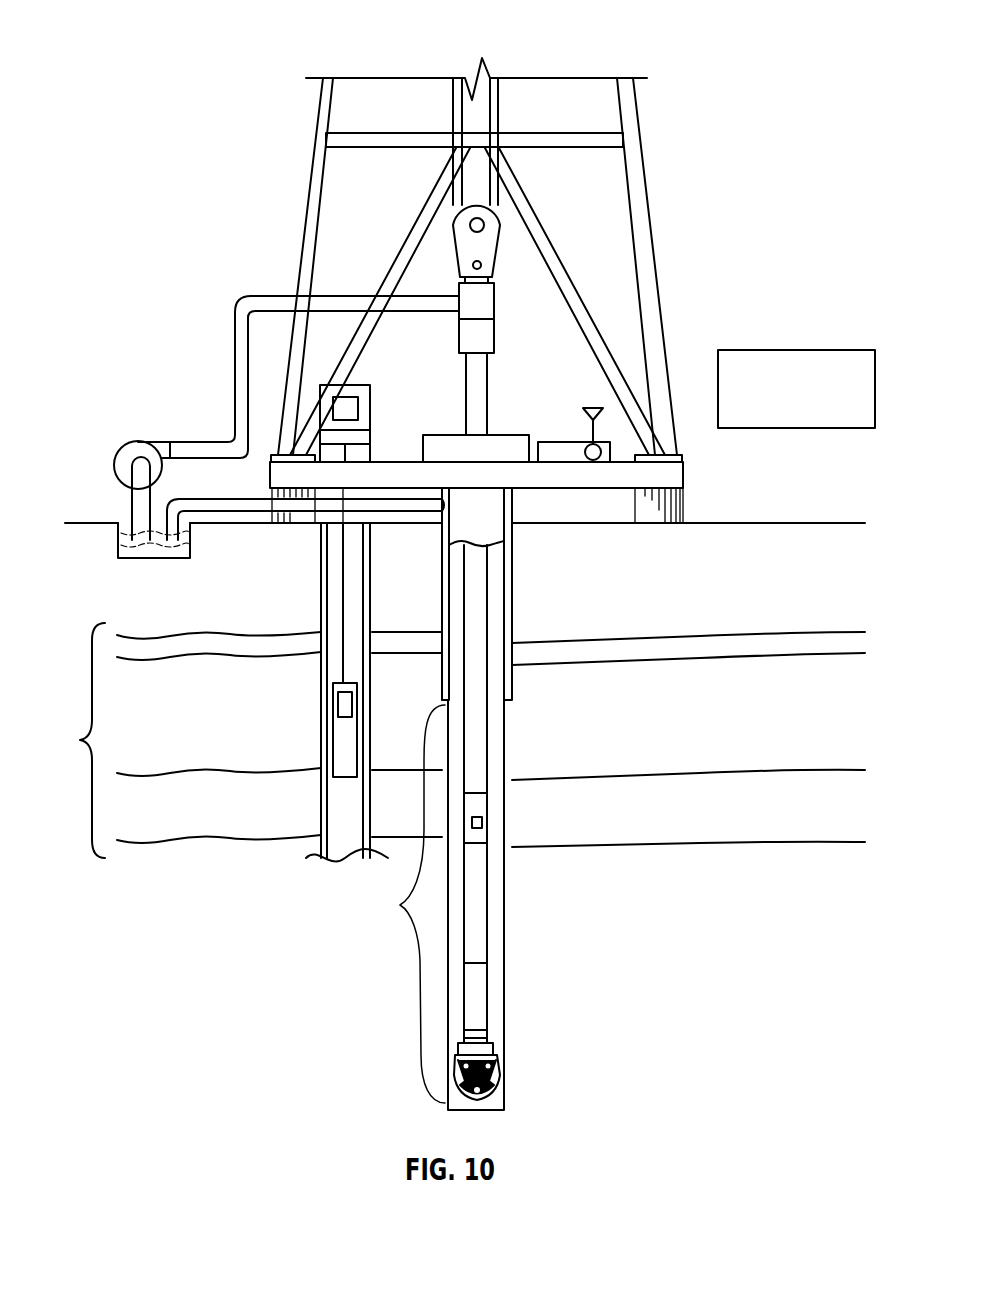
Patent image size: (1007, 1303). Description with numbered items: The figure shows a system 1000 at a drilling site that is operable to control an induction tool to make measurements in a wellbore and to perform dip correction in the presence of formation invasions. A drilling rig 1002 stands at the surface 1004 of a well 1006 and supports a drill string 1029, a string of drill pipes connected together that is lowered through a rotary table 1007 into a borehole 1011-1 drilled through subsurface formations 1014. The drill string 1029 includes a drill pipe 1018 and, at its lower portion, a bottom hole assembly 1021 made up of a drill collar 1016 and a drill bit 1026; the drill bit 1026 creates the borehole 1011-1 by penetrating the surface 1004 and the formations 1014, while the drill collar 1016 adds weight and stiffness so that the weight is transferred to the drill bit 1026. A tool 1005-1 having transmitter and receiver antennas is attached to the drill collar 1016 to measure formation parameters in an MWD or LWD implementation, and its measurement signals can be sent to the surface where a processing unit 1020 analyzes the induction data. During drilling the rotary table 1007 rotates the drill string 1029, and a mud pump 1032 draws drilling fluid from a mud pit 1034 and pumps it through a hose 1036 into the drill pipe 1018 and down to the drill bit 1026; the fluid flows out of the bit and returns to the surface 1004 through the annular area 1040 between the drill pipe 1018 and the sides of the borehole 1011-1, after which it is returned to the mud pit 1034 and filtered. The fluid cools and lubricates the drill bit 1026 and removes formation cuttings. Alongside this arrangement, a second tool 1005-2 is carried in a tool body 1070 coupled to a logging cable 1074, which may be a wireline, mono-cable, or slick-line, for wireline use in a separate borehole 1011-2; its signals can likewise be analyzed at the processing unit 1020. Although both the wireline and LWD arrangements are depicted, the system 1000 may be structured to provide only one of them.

The system 1000 is at (142, 46).
The drilling rig 1002 is at (650, 245).
The surface 1004 is at (782, 523).
The well 1006 is at (522, 522).
The rotary table 1007 is at (443, 433).
The borehole 1011-1 is at (505, 635).
The borehole 1011-2 is at (320, 617).
The subsurface formations 1014 is at (440, 740).
The drill collar 1016 is at (478, 840).
The tool 1005-1 is at (483, 822).
The tool 1005-2 is at (338, 703).
The drill pipe 1018 is at (490, 735).
The processing unit 1020 is at (795, 349).
The bottom hole assembly 1021 is at (392, 904).
The drill bit 1026 is at (493, 1058).
The drill string 1029 is at (496, 601).
The mud pump 1032 is at (143, 438).
The mud pit 1034 is at (122, 522).
The hose 1036 is at (233, 380).
The annular area 1040 is at (497, 770).
The tool body 1070 is at (333, 752).
The logging cable 1074 is at (343, 580).